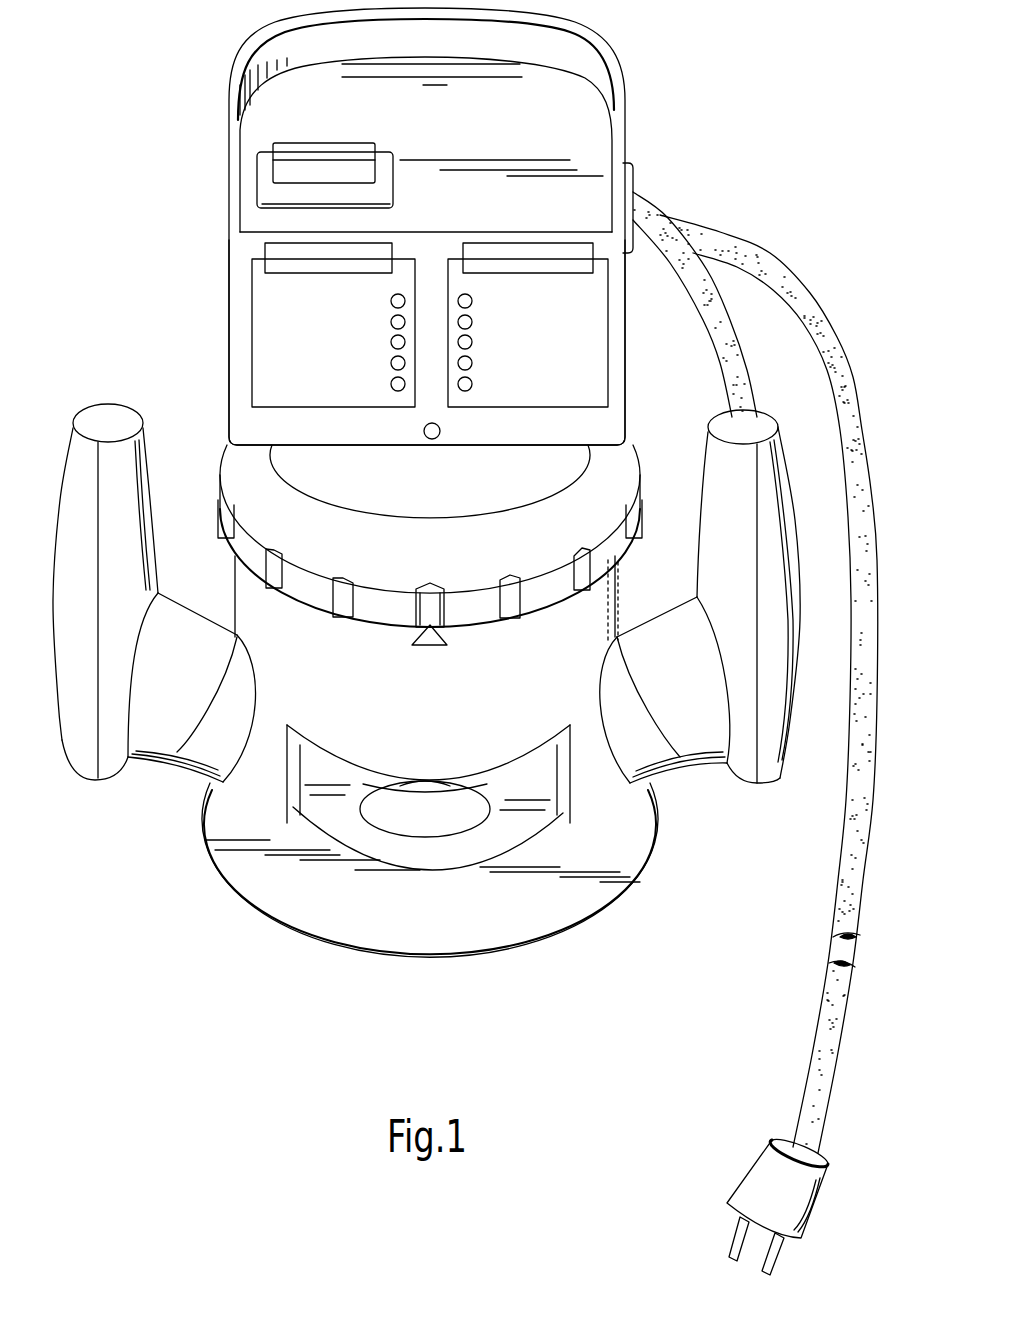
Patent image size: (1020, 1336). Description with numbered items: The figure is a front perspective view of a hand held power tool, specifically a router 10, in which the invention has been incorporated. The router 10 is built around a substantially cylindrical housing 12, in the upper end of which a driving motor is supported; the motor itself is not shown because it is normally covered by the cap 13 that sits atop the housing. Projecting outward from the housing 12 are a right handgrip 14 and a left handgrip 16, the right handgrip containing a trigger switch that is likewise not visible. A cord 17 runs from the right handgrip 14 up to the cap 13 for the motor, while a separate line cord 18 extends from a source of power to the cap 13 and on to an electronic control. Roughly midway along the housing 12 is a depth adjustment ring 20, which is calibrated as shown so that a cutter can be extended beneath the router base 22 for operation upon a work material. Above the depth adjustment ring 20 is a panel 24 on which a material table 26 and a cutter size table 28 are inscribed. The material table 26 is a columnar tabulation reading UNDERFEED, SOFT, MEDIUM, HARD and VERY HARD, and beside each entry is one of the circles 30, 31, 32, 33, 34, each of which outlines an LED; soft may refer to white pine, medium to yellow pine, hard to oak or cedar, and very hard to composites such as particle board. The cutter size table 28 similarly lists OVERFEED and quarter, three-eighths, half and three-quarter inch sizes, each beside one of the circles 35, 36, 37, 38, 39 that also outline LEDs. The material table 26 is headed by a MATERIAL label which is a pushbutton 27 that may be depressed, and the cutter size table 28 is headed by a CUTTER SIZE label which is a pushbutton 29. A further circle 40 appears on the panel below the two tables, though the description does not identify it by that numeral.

The router 10 is at (238, 905).
The housing 12 is at (461, 711).
The cap 13 is at (602, 49).
The right handgrip 14 is at (780, 470).
The left handgrip 16 is at (86, 418).
The cord 17 is at (735, 369).
The line cord 18 is at (773, 284).
The depth adjustment ring 20 is at (227, 467).
The router base 22 is at (626, 848).
The panel 24 is at (236, 341).
The material table 26 is at (259, 304).
The pushbutton 27 is at (266, 253).
The cutter size table 28 is at (598, 317).
The pushbutton 29 is at (545, 245).
The circle 30 is at (399, 293).
The circle 31 is at (403, 316).
The circle 32 is at (405, 345).
The circle 33 is at (403, 369).
The circle 34 is at (399, 392).
The circle 35 is at (465, 293).
The circle 36 is at (458, 322).
The circle 37 is at (460, 347).
The circle 38 is at (465, 371).
The circle 39 is at (471, 392).
The feed rate indicator light 40 is at (434, 440).